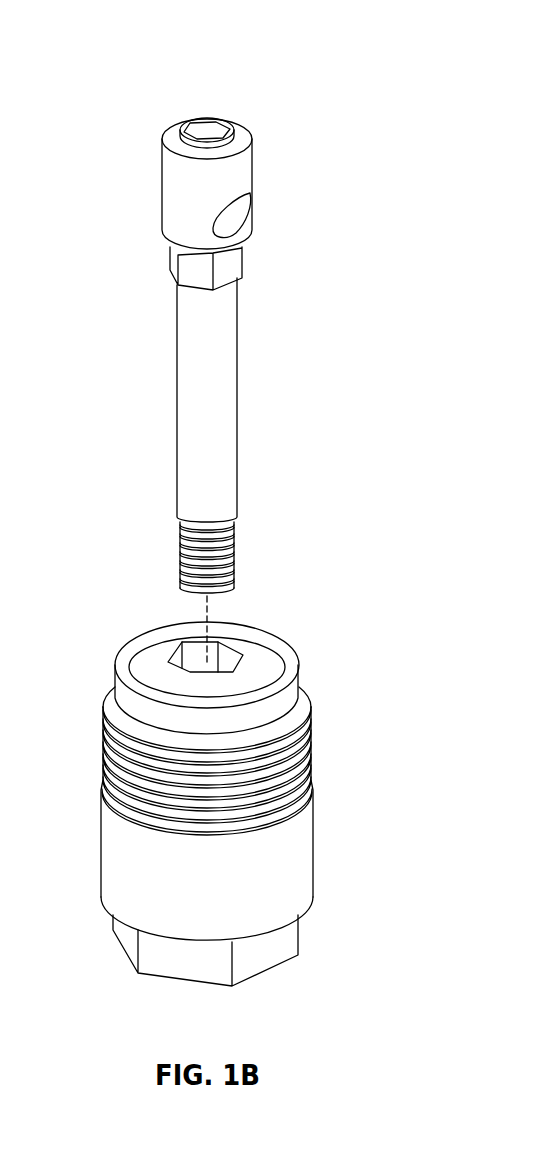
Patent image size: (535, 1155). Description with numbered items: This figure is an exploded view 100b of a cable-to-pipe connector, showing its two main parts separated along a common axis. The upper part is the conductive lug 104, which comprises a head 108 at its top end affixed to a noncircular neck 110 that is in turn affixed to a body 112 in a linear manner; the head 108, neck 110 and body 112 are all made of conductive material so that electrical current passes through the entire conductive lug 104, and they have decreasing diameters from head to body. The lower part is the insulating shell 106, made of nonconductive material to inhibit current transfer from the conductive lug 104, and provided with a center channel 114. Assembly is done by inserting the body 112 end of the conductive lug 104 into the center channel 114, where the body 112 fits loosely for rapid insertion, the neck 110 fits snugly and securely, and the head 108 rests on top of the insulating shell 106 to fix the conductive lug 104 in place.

The exploded view 100b is at (267, 78).
The conductive lug 104 is at (92, 116).
The insulating shell 106 is at (360, 625).
The head 108 is at (238, 170).
The noncircular neck 110 is at (228, 263).
The body 112 is at (210, 378).
The center channel 114 is at (228, 655).